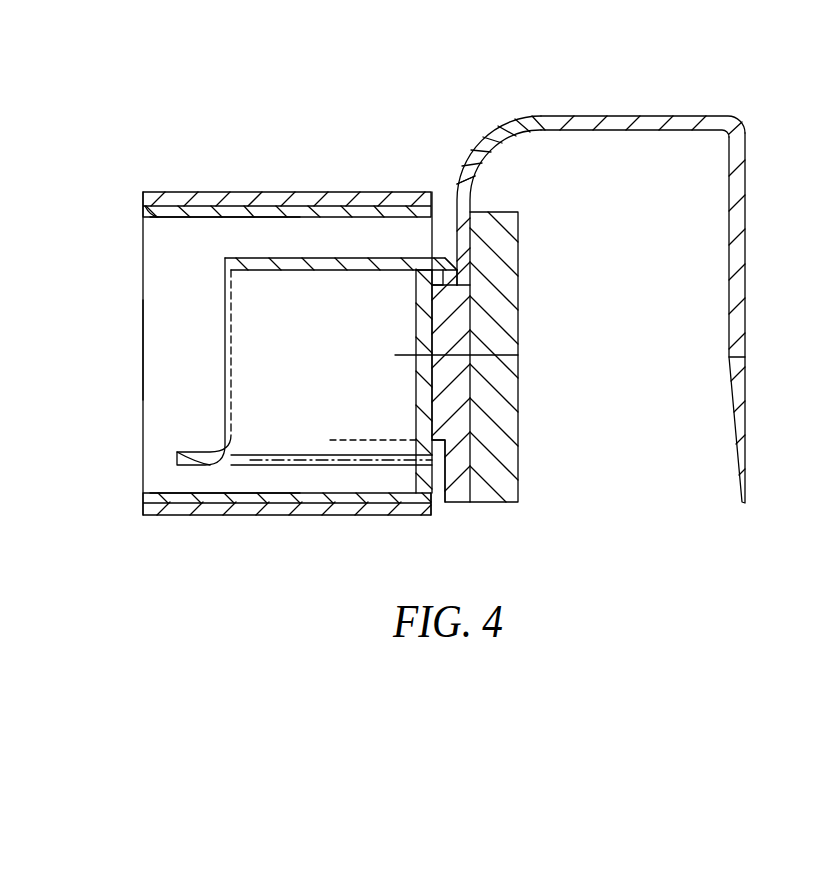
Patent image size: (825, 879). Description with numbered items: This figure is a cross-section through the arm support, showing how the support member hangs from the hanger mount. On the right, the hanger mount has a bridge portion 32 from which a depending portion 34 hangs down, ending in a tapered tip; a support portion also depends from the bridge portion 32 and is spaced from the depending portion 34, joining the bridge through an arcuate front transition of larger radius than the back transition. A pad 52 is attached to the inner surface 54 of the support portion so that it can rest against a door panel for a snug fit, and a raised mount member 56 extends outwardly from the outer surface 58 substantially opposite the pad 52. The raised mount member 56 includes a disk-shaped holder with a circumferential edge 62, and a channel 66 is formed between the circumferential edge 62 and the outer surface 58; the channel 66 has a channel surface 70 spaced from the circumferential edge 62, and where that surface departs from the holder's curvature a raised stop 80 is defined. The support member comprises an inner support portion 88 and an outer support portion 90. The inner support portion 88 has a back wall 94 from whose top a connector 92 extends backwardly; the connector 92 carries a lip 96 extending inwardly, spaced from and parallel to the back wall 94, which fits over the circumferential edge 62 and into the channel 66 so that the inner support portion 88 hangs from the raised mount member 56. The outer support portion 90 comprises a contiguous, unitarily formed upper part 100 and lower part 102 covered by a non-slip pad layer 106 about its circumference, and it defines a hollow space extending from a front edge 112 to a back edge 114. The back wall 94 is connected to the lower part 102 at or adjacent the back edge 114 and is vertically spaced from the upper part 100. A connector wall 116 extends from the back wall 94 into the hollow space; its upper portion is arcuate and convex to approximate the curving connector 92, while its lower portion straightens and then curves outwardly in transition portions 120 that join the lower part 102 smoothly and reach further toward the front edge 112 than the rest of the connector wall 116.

The bridge portion 32 is at (638, 116).
The depending portion 34 is at (747, 345).
The pad 52 is at (502, 380).
The inner surface 54 is at (478, 205).
The raised mount member 56 is at (440, 385).
The outer surface 58 is at (460, 172).
The circumferential edge 62 is at (440, 278).
The channel 66 is at (447, 242).
The channel surface 70 is at (463, 293).
The raised stop 80 is at (440, 462).
The inner support portion 88 is at (355, 365).
The outer support portion 90 is at (163, 183).
The connector 92 is at (434, 262).
The back wall 94 is at (425, 366).
The lip 96 is at (458, 268).
The upper part 100 is at (185, 217).
The lower part 102 is at (175, 492).
The non-slip pad layer 106 is at (238, 192).
The front edge 112 is at (143, 316).
The back edge 114 is at (437, 502).
The connector wall 116 is at (323, 258).
The transition portions 120 is at (215, 450).